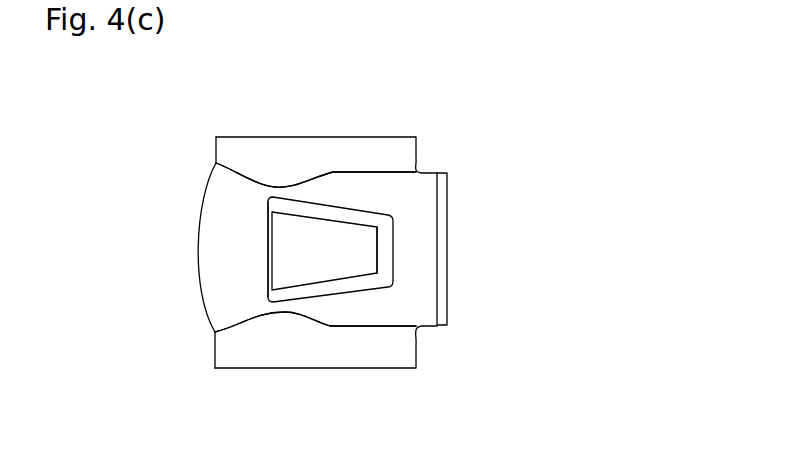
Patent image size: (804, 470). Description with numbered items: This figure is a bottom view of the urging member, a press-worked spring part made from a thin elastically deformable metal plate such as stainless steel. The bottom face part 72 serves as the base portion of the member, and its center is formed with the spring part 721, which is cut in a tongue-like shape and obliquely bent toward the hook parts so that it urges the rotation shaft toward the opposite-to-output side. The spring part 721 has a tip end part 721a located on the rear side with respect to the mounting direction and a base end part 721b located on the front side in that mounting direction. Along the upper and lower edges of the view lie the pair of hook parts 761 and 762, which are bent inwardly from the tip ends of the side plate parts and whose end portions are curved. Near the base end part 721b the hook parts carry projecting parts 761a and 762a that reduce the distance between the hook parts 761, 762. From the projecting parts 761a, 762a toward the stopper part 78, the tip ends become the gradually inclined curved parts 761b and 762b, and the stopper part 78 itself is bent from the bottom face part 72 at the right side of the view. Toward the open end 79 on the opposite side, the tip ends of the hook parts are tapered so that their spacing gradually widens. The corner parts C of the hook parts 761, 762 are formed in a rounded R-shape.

The bottom face part 72 is at (213, 223).
The spring part 721 is at (305, 273).
The tip end part 721a is at (377, 253).
The base end part 721b is at (268, 247).
The hook part 761 is at (228, 353).
The projecting part 761a is at (285, 312).
The curved part 761b is at (322, 320).
The hook part 762 is at (237, 147).
The projecting part 762a is at (281, 188).
The curved part 762b is at (320, 175).
The stopper part 78 is at (442, 252).
The open end 79 is at (188, 292).
The corner parts C is at (216, 165).